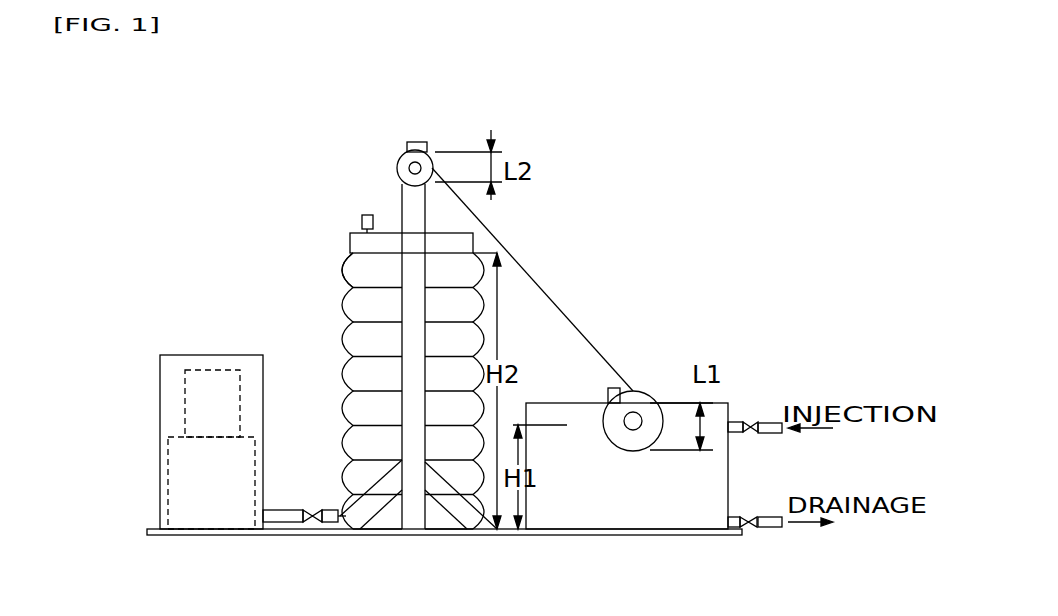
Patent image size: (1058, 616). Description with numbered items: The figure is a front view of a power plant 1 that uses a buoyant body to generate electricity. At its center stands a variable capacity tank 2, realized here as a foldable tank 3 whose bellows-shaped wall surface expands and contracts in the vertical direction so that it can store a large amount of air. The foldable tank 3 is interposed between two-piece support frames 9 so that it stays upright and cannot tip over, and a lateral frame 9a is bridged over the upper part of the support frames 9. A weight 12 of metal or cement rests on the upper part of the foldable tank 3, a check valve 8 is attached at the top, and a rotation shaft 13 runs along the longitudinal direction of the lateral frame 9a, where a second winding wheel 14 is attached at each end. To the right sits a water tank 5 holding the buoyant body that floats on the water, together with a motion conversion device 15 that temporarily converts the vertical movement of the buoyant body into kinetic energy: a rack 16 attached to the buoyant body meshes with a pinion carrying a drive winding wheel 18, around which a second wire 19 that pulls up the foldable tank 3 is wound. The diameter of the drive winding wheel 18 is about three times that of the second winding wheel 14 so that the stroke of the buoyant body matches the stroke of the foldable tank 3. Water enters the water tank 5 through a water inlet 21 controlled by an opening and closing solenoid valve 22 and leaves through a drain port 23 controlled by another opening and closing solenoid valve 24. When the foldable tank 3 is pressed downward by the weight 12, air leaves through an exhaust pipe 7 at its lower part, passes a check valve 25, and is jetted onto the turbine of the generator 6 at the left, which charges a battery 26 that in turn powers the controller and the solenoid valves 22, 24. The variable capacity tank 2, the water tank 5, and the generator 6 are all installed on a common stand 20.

The power plant 1 is at (289, 163).
The variable capacity tank 2 is at (340, 332).
The foldable tank 3 is at (347, 270).
The water tank 5 is at (593, 520).
The generator 6 is at (160, 485).
The exhaust pipe 7 is at (277, 530).
The check valve 8 is at (362, 222).
The support frames 9 is at (402, 195).
The lateral frame 9a is at (413, 142).
The weight 12 is at (350, 242).
The rotation shaft 13 is at (420, 164).
The second winding wheel 14 is at (397, 168).
The motion conversion device 15 is at (563, 358).
The rack 16 is at (608, 394).
The drive winding wheel 18 is at (643, 391).
The second wire 19 is at (567, 310).
The stand 20 is at (497, 533).
The water inlet 21 is at (733, 422).
The opening and closing solenoid valve 22 is at (752, 422).
The drain port 23 is at (733, 537).
The opening and closing solenoid valve 24 is at (750, 528).
The check valve 25 is at (313, 527).
The battery 26 is at (177, 402).